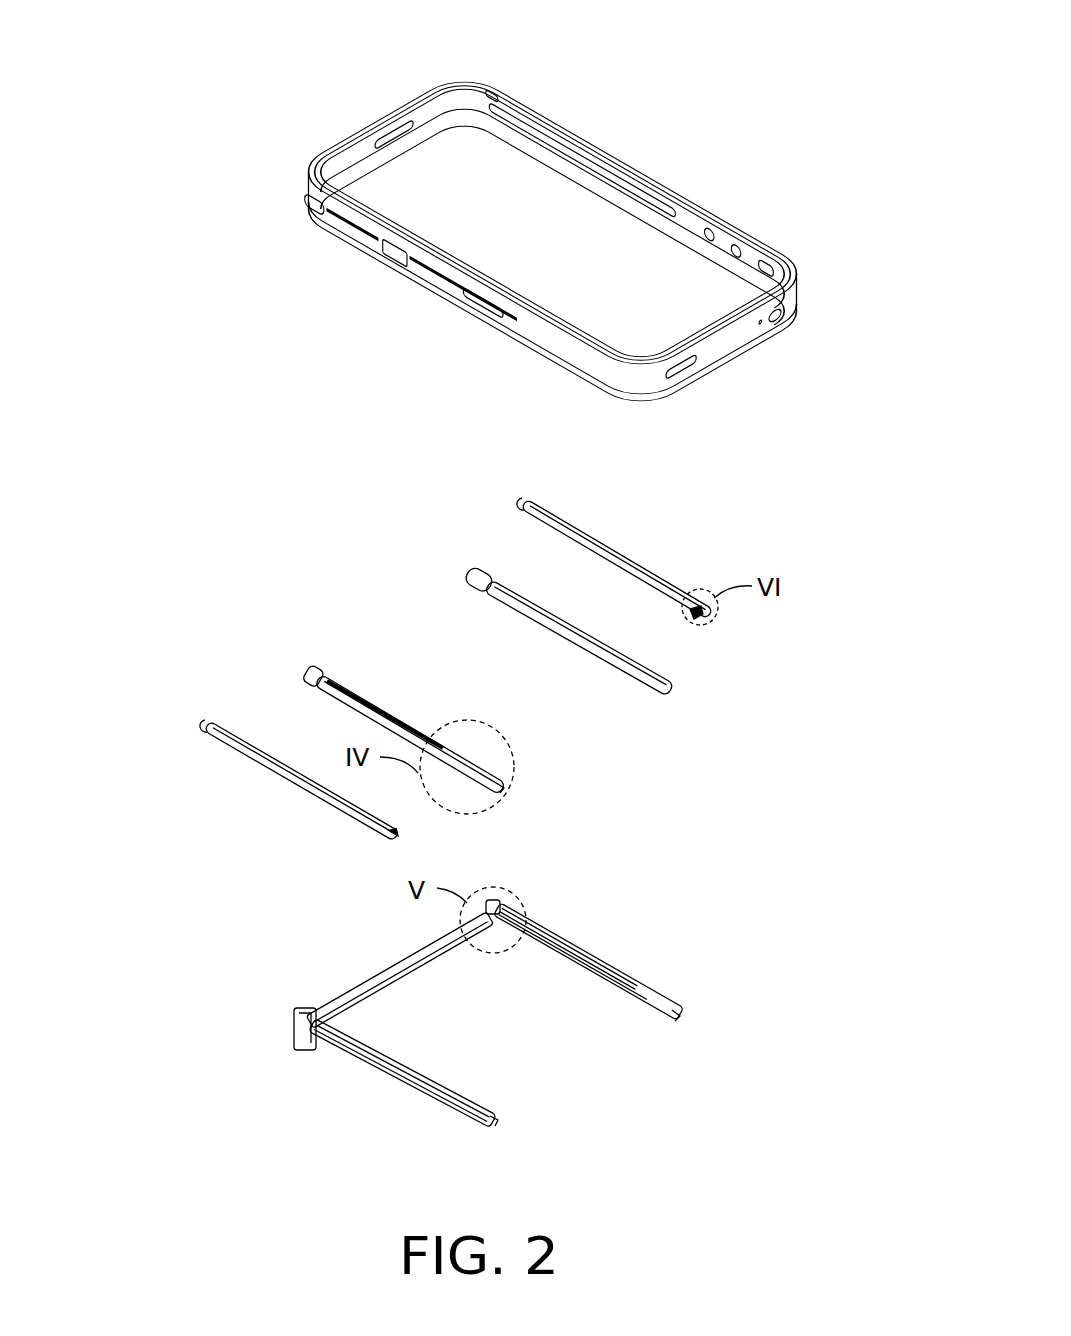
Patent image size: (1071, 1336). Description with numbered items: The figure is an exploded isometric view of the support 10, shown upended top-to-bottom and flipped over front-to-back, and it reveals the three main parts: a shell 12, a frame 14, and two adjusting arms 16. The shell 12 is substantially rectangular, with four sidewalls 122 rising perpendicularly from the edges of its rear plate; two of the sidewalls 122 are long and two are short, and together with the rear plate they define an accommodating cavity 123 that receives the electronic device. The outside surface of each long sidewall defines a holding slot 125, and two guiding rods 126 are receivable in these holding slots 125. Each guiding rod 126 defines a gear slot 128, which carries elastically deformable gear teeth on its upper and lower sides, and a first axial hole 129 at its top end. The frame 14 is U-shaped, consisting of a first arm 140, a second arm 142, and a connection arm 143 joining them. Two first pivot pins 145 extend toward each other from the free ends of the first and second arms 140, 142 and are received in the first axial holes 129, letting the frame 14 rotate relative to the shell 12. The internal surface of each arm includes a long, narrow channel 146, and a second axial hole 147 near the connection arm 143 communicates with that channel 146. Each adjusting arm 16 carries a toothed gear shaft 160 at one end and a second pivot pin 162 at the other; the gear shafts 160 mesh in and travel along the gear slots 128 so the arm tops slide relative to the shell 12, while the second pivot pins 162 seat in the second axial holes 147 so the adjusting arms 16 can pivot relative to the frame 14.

The support 10 is at (473, 32).
The shell 12 is at (552, 248).
The sidewalls 122 is at (530, 330).
The accommodating cavity 123 is at (690, 280).
The holding slot 125 is at (363, 233).
The frame 14 is at (535, 991).
The first arm 140 is at (645, 993).
The second arm 142 is at (360, 1050).
The connection arm 143 is at (398, 977).
The first pivot pins 145 is at (675, 1021).
The channel 146 is at (543, 938).
The second axial hole 147 is at (498, 905).
The adjusting arms 16 is at (580, 522).
The gear shaft 160 is at (706, 620).
The second pivot pin 162 is at (527, 497).
The guiding rods 126 is at (583, 645).
The gear slot 128 is at (432, 738).
The first axial hole 129 is at (503, 793).